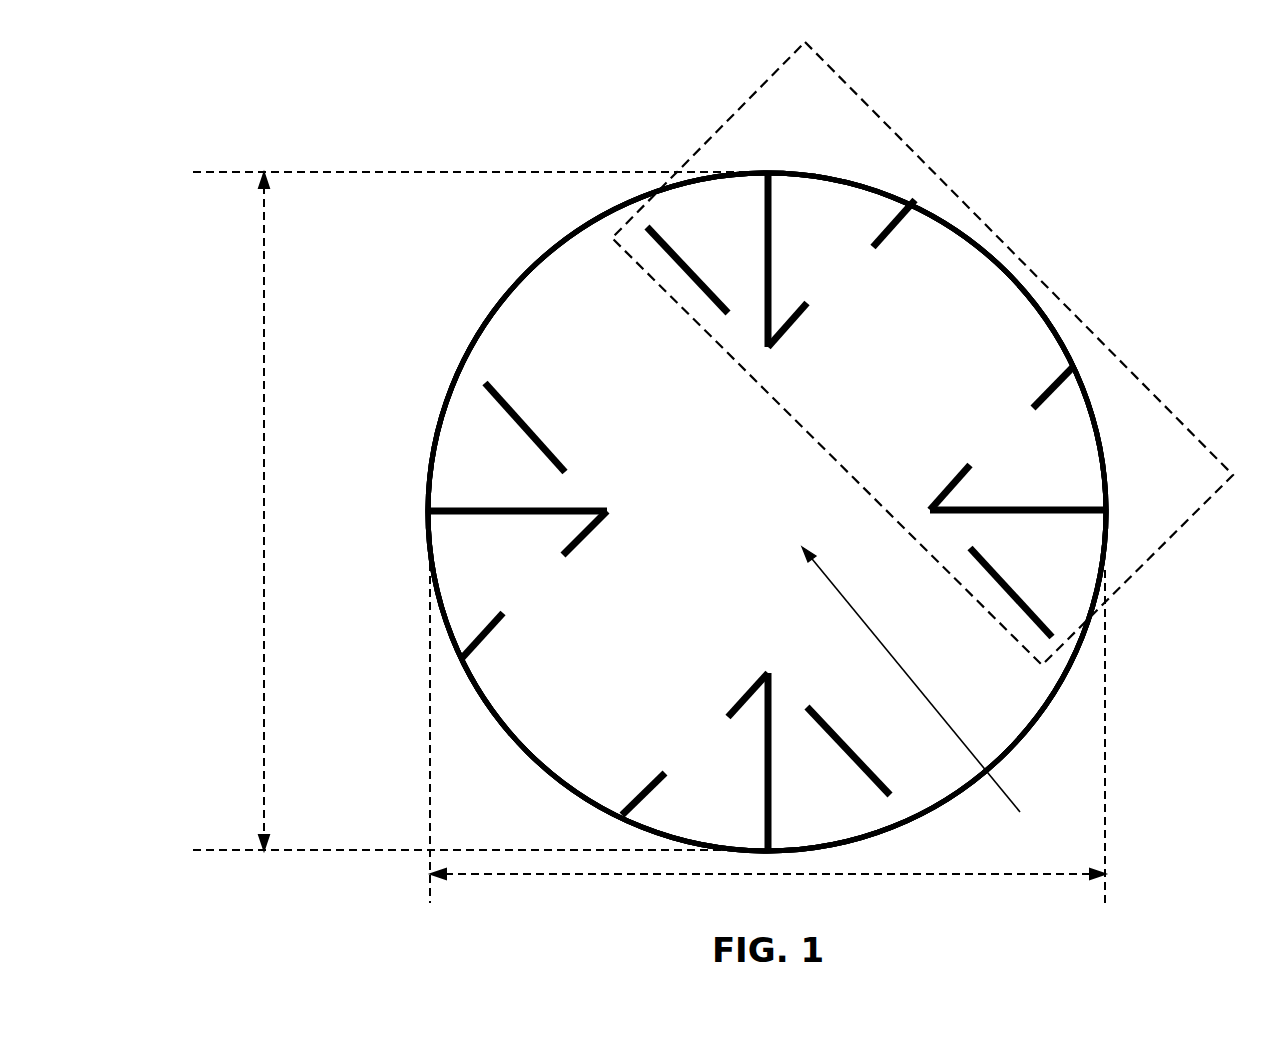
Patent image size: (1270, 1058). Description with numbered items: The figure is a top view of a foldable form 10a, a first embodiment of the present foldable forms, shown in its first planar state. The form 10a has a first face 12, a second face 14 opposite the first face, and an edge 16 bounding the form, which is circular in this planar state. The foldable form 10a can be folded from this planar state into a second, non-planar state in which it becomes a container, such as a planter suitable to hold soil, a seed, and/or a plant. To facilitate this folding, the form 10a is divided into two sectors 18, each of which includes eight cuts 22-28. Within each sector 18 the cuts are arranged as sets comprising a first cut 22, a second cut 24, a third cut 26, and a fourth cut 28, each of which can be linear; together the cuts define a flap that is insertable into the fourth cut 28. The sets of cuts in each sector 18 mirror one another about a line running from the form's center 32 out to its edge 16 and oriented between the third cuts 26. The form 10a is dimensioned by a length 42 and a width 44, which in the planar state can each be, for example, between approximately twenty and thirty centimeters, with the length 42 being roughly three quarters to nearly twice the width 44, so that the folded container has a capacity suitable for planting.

The foldable form 10a is at (436, 126).
The first face 12 is at (613, 347).
The second face 14 is at (622, 655).
The edge 16 is at (432, 490).
The sector 18 is at (1006, 222).
The first cut 22 is at (766, 222).
The second cut 24 is at (792, 310).
The third cut 26 is at (899, 203).
The fourth cut 28 is at (652, 230).
The center 32 is at (928, 696).
The length 42 is at (264, 469).
The width 44 is at (585, 872).